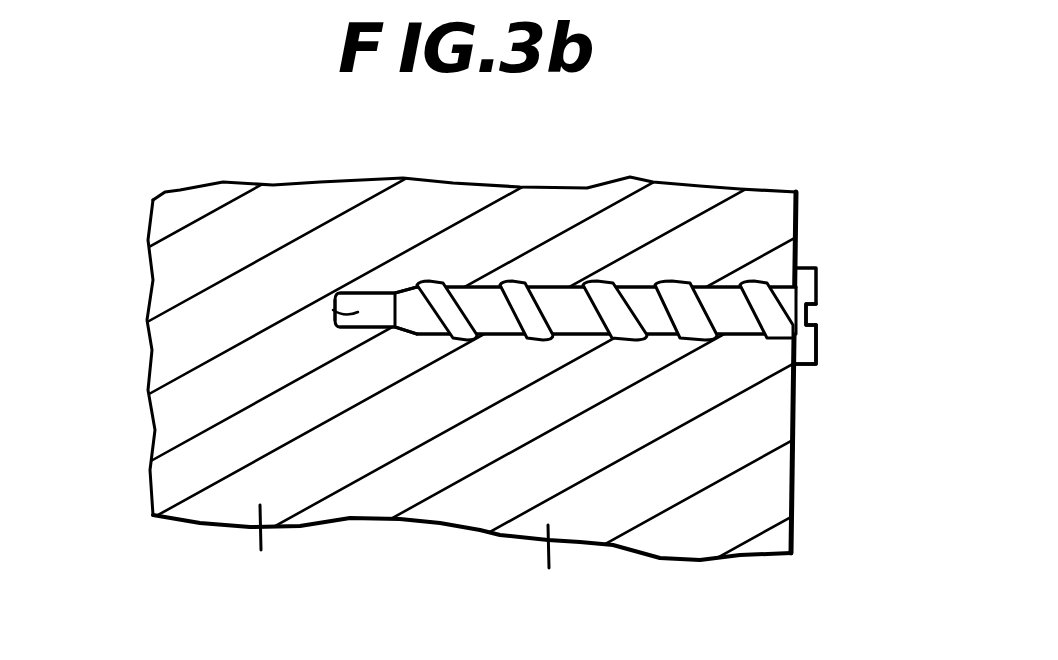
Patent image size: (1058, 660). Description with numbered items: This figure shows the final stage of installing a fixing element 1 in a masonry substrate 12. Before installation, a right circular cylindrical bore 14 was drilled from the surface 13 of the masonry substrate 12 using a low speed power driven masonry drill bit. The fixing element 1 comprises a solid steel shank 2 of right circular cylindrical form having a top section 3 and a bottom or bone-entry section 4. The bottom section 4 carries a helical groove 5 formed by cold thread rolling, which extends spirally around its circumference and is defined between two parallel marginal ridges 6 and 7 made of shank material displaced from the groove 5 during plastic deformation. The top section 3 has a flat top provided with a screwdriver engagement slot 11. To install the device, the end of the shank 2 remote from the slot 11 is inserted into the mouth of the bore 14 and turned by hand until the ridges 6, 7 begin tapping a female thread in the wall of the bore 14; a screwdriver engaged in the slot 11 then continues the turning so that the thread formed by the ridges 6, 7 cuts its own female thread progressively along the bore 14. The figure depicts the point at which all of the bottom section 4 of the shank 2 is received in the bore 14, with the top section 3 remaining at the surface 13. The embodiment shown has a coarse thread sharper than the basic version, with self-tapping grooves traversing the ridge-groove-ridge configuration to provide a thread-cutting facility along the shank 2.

The fixing element 1 is at (594, 300).
The shank 2 is at (497, 334).
The top section 3 is at (817, 362).
The bottom section 4 is at (553, 287).
The groove 5 is at (672, 287).
The marginal ridge 6 is at (483, 287).
The marginal ridge 7 is at (517, 287).
The screwdriver engagement slot 11 is at (816, 313).
The masonry substrate 12 is at (317, 200).
The surface 13 is at (798, 217).
The bore 14 is at (335, 302).